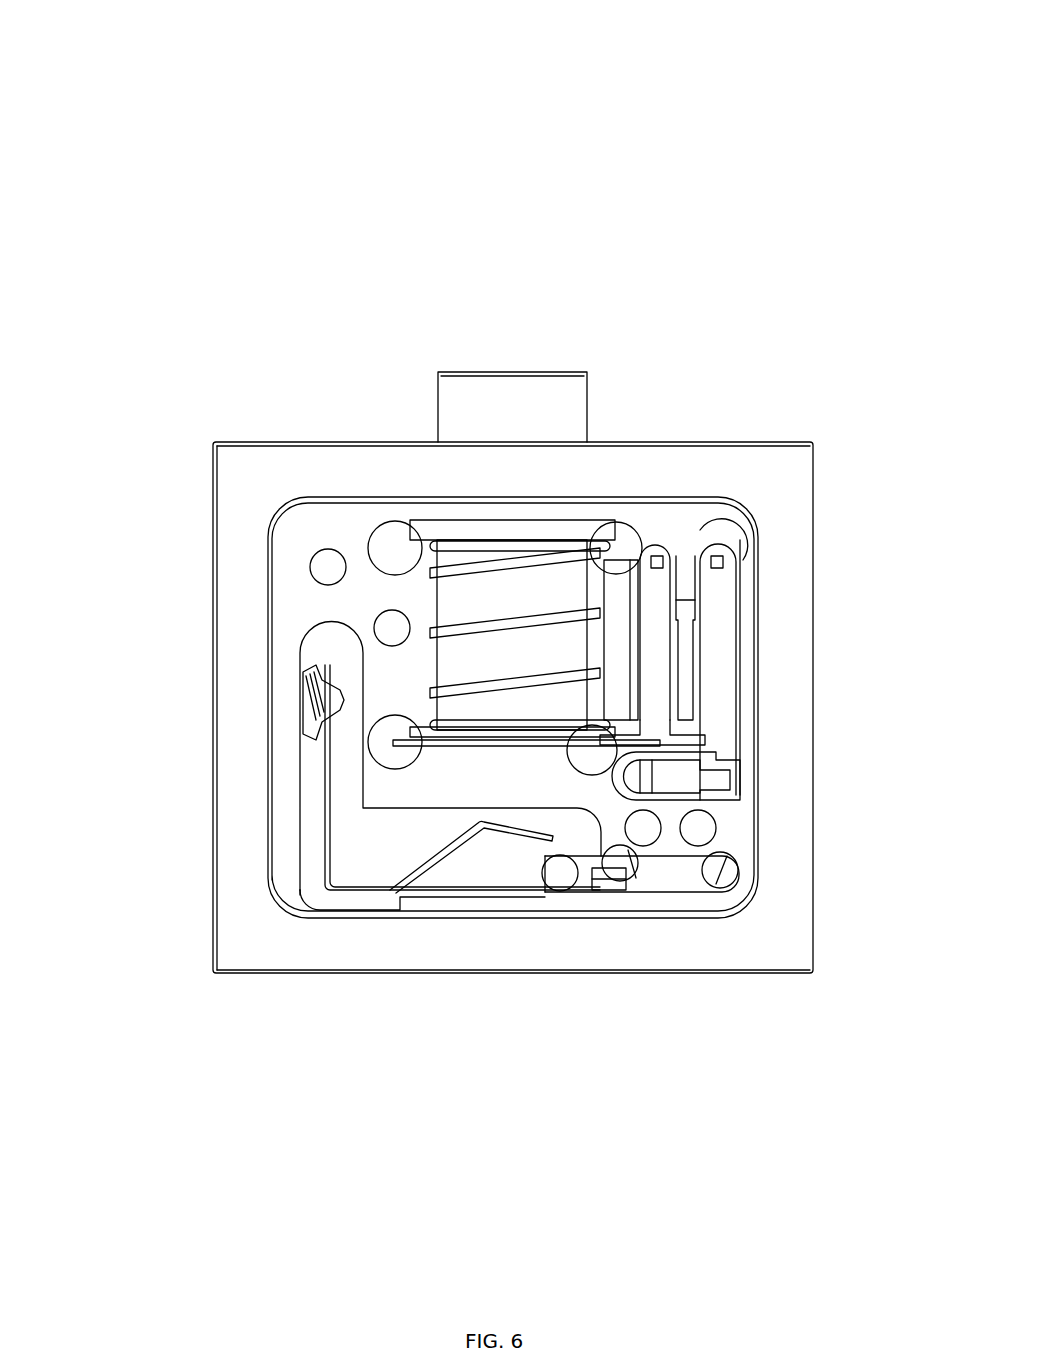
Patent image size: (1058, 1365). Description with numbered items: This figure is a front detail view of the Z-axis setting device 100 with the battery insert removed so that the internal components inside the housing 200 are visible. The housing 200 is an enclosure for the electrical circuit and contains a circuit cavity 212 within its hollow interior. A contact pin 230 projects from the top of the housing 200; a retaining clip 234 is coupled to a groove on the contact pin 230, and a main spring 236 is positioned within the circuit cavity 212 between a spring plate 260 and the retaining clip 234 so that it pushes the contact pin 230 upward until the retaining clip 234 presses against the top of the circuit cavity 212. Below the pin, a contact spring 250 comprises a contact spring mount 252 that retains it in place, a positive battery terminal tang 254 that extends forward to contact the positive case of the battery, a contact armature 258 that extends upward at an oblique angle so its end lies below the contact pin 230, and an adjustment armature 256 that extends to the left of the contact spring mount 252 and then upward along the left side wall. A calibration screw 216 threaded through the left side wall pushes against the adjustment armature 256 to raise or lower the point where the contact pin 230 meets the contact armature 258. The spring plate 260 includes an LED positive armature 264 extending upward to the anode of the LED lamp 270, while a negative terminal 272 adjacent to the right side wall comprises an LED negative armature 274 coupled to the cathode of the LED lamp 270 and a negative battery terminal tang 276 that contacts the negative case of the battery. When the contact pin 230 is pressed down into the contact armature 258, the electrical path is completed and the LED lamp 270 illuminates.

The Z-axis setting device 100 is at (135, 178).
The housing 200 is at (815, 566).
The circuit cavity 212 is at (392, 522).
The calibration screw 216 is at (312, 716).
The contact pin 230 is at (568, 370).
The retaining clip 234 is at (603, 530).
The main spring 236 is at (437, 615).
The contact spring 250 is at (365, 895).
The contact spring mount 252 is at (695, 893).
The positive battery terminal tang 254 is at (606, 882).
The adjustment armature 256 is at (318, 758).
The contact armature 258 is at (483, 825).
The spring plate 260 is at (480, 742).
The LED positive armature 264 is at (660, 671).
The LED lamp 270 is at (716, 530).
The negative terminal 272 is at (745, 727).
The LED negative armature 274 is at (723, 633).
The negative battery terminal tang 276 is at (655, 787).